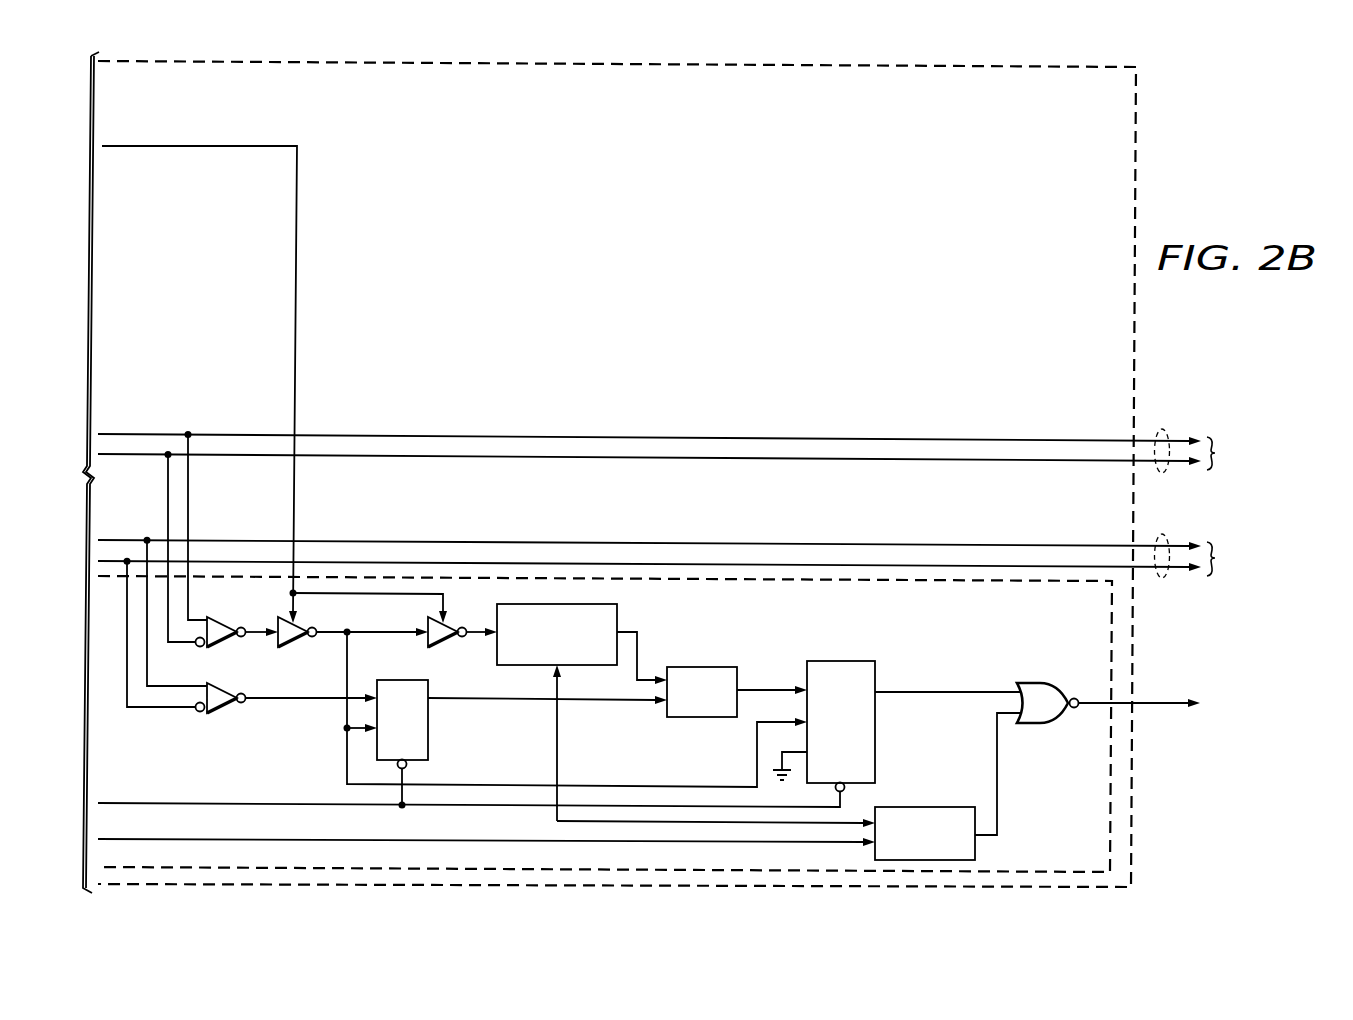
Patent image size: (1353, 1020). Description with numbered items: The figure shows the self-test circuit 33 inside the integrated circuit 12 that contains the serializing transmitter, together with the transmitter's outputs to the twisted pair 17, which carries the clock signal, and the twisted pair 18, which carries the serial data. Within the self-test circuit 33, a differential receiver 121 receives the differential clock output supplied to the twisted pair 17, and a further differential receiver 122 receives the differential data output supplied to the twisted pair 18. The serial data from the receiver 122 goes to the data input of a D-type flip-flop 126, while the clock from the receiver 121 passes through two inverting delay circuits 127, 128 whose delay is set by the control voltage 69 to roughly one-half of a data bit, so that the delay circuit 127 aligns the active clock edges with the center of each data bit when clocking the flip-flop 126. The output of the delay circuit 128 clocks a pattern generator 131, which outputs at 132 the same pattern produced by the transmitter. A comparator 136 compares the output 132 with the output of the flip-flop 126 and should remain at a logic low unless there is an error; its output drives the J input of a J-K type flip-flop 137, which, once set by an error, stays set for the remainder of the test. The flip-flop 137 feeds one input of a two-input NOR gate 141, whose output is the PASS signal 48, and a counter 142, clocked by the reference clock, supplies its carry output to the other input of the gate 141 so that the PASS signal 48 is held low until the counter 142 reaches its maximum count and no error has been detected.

The integrated circuit 12 is at (1139, 150).
The twisted pair 17 is at (1165, 432).
The twisted pair 18 is at (1165, 580).
The self-test circuit 33 is at (993, 656).
The PASS signal 48 is at (1153, 704).
The control voltage 69 is at (297, 296).
The differential receiver 121 is at (226, 648).
The differential receiver 122 is at (226, 714).
The D-type flip-flop 126 is at (428, 730).
The inverting delay circuit 127 is at (297, 648).
The inverting delay circuit 128 is at (445, 648).
The pattern generator 131 is at (618, 612).
The pattern generator output 132 is at (639, 652).
The comparator 136 is at (702, 717).
The J-K type flip-flop 137 is at (843, 661).
The NOR gate 141 is at (1047, 727).
The counter 142 is at (925, 807).